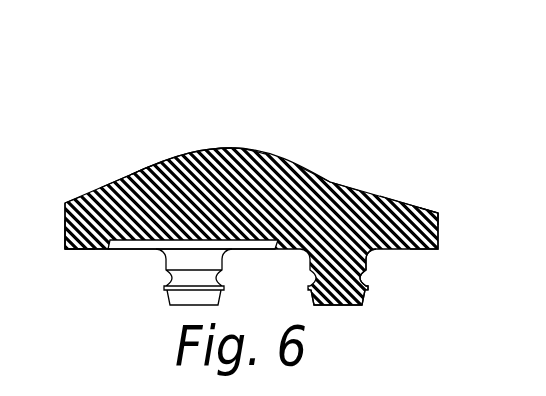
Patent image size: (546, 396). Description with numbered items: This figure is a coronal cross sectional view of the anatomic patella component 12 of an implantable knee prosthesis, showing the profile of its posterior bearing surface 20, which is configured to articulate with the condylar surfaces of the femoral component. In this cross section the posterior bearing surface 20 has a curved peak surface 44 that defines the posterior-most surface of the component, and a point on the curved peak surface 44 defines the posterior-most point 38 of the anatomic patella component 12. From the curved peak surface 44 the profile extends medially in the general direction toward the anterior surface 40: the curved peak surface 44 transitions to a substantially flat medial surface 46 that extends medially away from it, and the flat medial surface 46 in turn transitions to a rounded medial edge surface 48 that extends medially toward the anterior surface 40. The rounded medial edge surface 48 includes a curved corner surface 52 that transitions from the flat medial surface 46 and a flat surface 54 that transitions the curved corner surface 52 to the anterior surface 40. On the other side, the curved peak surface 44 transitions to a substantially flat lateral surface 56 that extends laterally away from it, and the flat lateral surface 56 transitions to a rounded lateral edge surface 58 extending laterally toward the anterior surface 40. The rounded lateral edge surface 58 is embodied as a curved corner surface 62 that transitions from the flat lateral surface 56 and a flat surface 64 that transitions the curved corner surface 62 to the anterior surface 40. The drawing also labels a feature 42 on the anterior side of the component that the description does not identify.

The anatomic patella component 12 is at (310, 108).
The posterior bearing surface 20 is at (158, 161).
The posterior-most point 38 is at (223, 148).
The curved peak surface 44 is at (250, 151).
The flat medial surface 46 is at (131, 175).
The curved corner surface 52 is at (66, 203).
The rounded medial edge surface 48 is at (65, 222).
The rounded lateral edge surface 58 is at (0, 216).
The flat surface 54 is at (61, 250).
The flat lateral surface 56 is at (336, 183).
The curved corner surface 62 is at (435, 213).
The flat surface 64 is at (440, 250).
The anterior surface 40 is at (409, 249).
The stem foot 42 is at (368, 304).